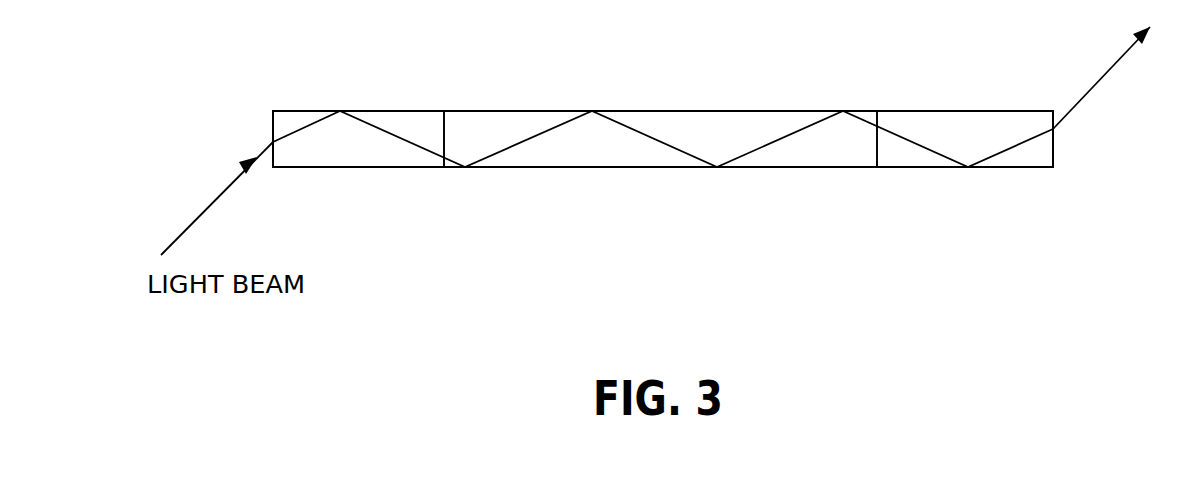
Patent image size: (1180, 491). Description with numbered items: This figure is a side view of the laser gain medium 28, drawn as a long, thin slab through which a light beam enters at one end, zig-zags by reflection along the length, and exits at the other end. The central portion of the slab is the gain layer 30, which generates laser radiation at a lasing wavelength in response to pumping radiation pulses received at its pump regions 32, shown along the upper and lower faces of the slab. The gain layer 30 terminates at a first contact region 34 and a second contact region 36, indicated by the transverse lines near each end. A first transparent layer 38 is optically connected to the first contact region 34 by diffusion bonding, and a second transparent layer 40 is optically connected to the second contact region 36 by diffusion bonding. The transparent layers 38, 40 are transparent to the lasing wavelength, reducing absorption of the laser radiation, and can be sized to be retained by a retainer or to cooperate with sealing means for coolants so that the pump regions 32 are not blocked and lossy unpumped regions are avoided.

The laser gain medium 28 is at (675, 278).
The gain layer 30 is at (831, 152).
The pump regions 32 is at (709, 111).
The first contact region 34 is at (879, 151).
The second contact region 36 is at (447, 136).
The first transparent layer 38 is at (954, 117).
The second transparent layer 40 is at (392, 117).